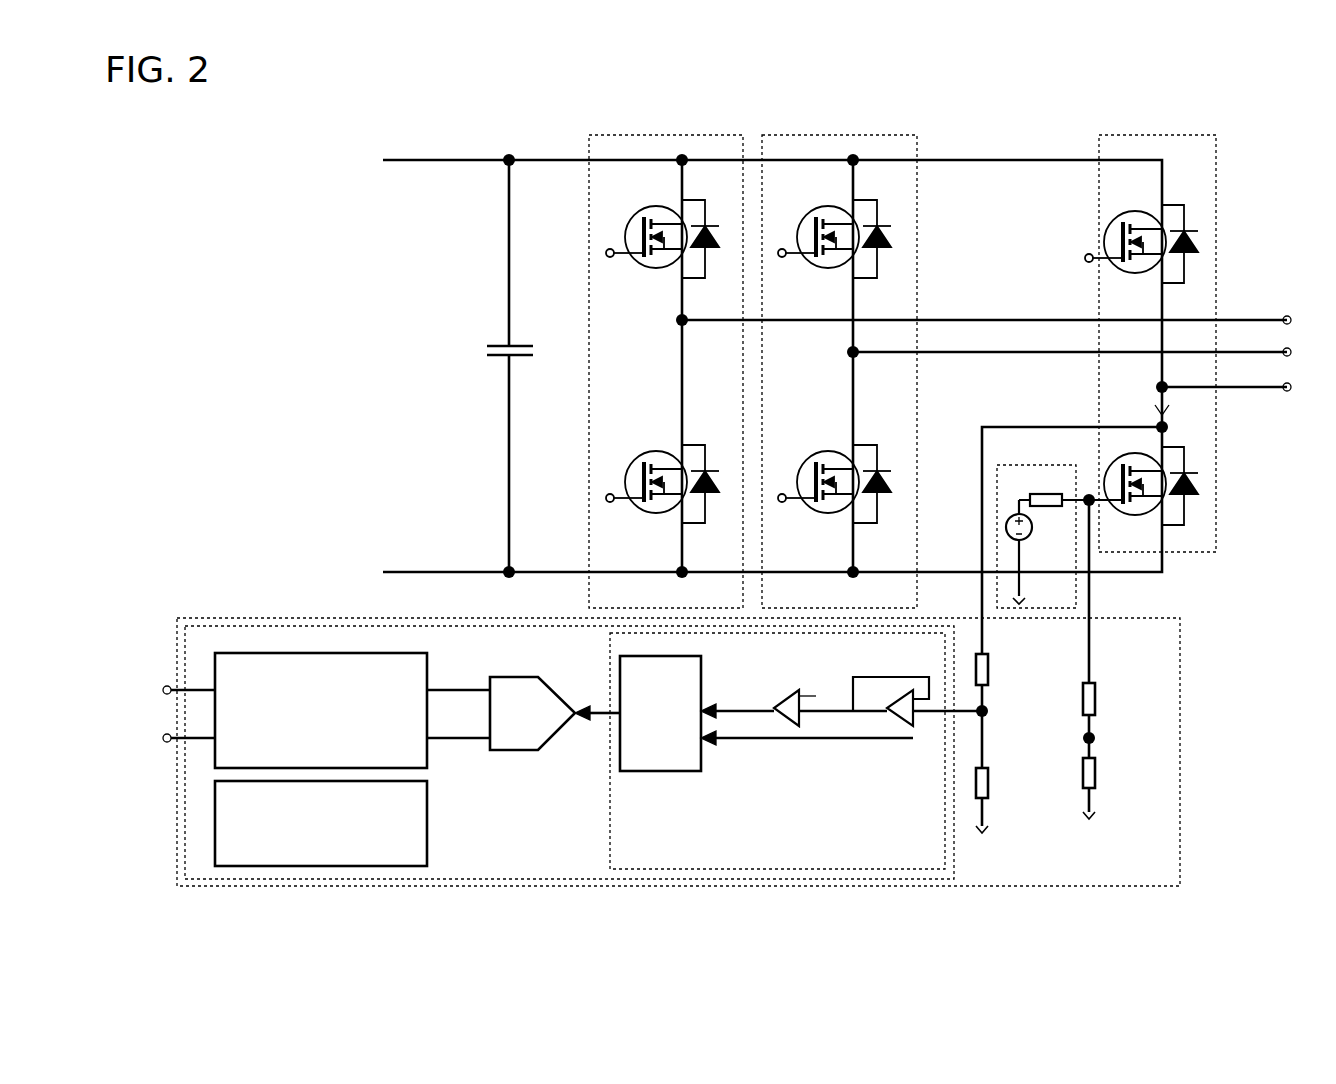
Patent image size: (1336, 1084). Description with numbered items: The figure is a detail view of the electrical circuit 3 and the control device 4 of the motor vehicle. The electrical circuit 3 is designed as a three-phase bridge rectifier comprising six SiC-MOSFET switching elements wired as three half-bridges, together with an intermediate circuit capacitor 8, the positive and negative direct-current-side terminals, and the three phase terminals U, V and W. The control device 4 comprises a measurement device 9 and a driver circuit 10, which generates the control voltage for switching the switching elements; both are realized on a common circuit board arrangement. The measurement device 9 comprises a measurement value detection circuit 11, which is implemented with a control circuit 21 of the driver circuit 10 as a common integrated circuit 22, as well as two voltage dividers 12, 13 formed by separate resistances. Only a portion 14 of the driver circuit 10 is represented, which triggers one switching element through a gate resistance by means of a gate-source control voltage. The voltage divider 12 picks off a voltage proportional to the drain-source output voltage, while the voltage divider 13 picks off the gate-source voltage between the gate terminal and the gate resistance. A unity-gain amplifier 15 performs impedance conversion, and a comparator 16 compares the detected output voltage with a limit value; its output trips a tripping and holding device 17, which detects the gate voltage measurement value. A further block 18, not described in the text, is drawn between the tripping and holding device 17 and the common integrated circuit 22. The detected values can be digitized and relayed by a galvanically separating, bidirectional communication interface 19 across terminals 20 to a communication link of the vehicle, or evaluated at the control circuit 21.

The electrical circuit 3 is at (330, 137).
The control device 4 is at (174, 616).
The intermediate circuit capacitor 8 is at (497, 345).
The measurement device 9 is at (1072, 695).
The driver circuit 10 is at (669, 666).
The measurement value detection circuit 11 is at (751, 870).
The voltage divider 12 is at (1003, 685).
The voltage divider 13 is at (1107, 685).
The portion of the driver circuit 14 is at (1013, 466).
The unity-gain amplifier 15 is at (902, 723).
The comparator 16 is at (792, 718).
The tripping and holding device 17 is at (672, 773).
The logic gate 18 is at (514, 752).
The communication interface 19 is at (377, 772).
The terminals 20 is at (165, 742).
The control circuit 21 is at (420, 868).
The common integrated circuit 22 is at (269, 628).